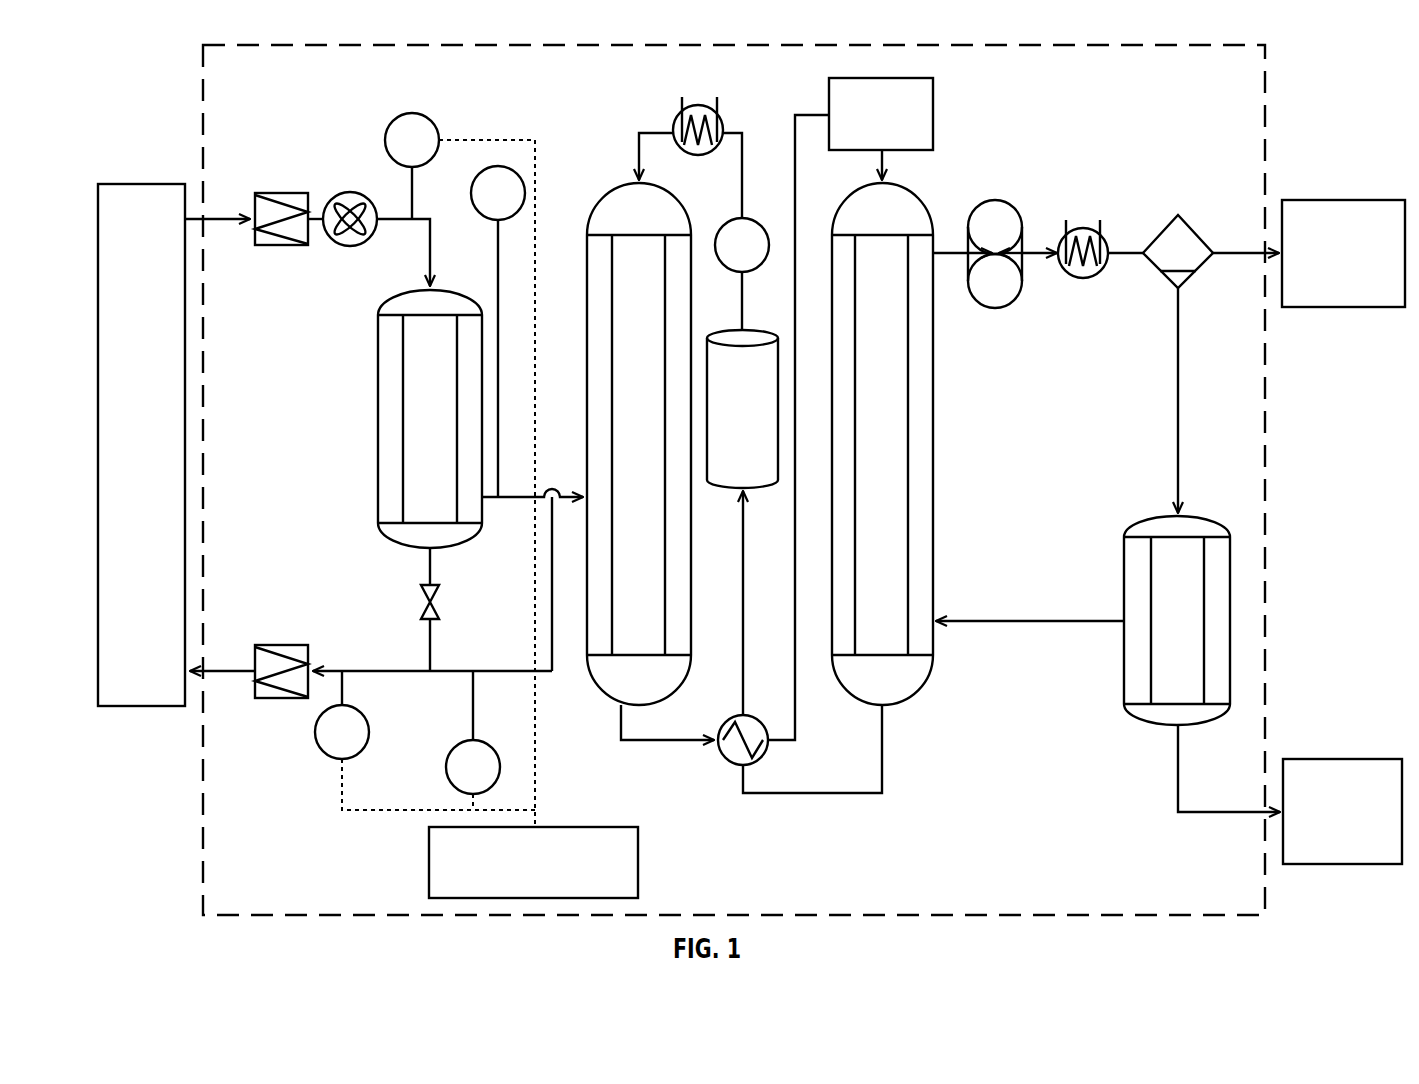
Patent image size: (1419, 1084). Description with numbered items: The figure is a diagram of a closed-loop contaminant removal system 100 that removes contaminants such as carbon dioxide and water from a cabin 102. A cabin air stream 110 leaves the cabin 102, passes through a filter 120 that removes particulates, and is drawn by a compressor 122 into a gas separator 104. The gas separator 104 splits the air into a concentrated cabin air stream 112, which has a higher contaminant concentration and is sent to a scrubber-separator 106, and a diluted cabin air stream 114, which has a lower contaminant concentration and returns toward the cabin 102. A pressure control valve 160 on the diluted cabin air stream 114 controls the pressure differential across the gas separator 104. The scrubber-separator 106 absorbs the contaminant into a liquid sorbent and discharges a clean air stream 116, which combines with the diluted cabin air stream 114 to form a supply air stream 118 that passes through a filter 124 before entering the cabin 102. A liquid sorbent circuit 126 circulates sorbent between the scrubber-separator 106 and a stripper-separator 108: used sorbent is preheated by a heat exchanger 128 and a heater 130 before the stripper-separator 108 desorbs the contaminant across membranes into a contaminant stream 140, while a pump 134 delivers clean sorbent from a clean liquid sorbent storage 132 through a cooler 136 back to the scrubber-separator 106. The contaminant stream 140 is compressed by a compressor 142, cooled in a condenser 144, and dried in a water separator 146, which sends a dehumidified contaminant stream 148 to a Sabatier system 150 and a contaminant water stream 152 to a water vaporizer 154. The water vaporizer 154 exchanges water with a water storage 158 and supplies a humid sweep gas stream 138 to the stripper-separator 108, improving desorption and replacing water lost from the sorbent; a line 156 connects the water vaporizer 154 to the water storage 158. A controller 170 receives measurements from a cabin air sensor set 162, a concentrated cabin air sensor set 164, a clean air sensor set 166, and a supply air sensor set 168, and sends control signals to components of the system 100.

The contaminant removal system 100 is at (734, 480).
The cabin 102 is at (141, 445).
The gas separator 104 is at (430, 419).
The scrubber-separator 106 is at (650, 436).
The stripper-separator 108 is at (882, 444).
The cabin air stream 110 is at (250, 219).
The concentrated cabin air stream 112 is at (571, 500).
The diluted cabin air stream 114 is at (430, 667).
The clean air stream 116 is at (466, 677).
The supply air stream 118 is at (218, 671).
The filter 120 is at (267, 193).
The compressor 122 is at (366, 208).
The filter 124 is at (267, 645).
The liquid sorbent circuit 126 is at (965, 141).
The heat exchanger 128 is at (737, 763).
The heater 130 is at (881, 129).
The clean liquid sorbent storage 132 is at (742, 409).
The pump 134 is at (742, 274).
The cooler 136 is at (720, 115).
The sweep gas stream 138 is at (986, 620).
The contaminant stream 140 is at (950, 258).
The compressor 142 is at (993, 203).
The condenser 144 is at (1080, 232).
The water separator 146 is at (1175, 222).
The dehumidified contaminant stream 148 is at (1232, 258).
The Sabatier system 150 is at (1343, 253).
The contaminant water stream 152 is at (1178, 464).
The water vaporizer 154 is at (1177, 620).
The water outlet line 156 is at (1178, 784).
The water storage 158 is at (1342, 811).
The pressure control valve 160 is at (419, 602).
The cabin air sensor set 162 is at (460, 470).
The concentrated cabin air sensor set 164 is at (498, 331).
The clean air sensor set 166 is at (473, 740).
The supply air sensor set 168 is at (425, 740).
The controller 170 is at (533, 862).